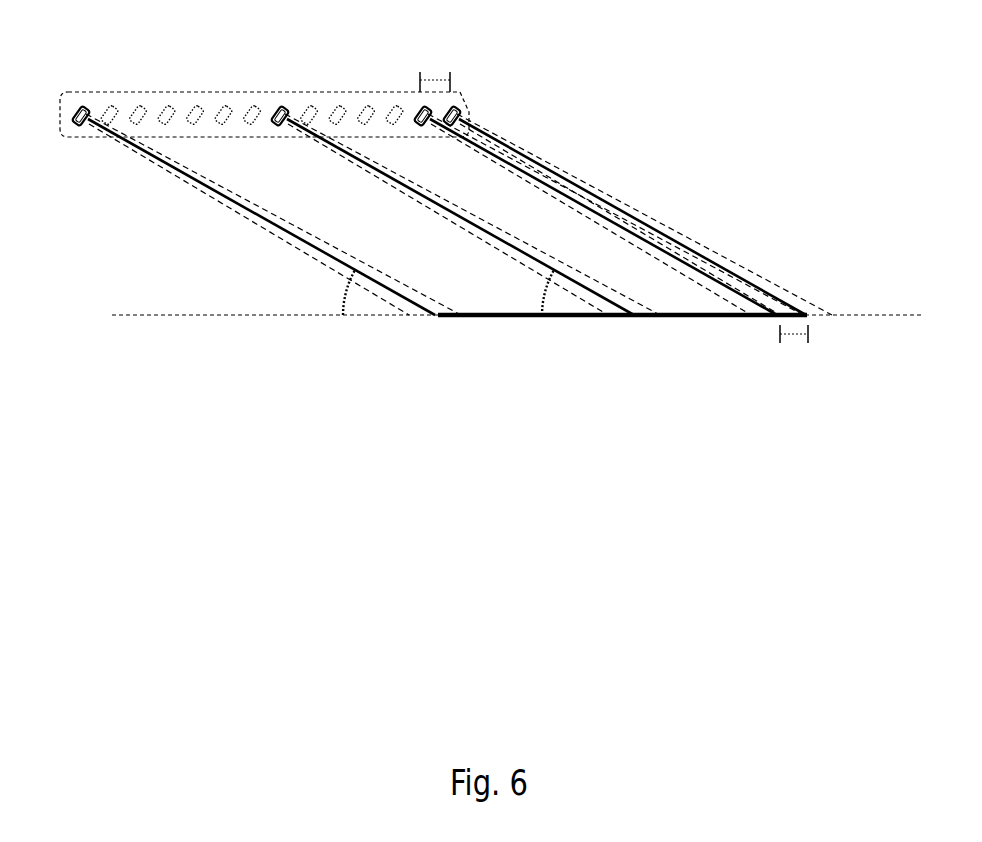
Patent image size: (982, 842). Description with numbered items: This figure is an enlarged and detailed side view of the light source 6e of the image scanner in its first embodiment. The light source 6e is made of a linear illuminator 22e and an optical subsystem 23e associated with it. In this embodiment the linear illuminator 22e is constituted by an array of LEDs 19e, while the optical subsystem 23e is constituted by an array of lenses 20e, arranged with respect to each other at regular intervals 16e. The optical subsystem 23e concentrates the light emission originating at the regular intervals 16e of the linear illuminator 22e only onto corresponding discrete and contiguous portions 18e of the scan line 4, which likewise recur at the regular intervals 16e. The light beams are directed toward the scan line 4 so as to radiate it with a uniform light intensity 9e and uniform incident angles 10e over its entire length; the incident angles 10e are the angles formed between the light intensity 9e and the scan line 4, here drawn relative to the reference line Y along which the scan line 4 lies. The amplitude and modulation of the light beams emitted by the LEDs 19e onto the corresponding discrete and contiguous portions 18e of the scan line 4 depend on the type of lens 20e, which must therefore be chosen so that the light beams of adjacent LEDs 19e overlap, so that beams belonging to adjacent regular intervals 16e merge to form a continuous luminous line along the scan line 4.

The scan line 4 is at (503, 318).
The light source 6e is at (251, 93).
The light intensity 9e is at (392, 178).
The incident angles 10e is at (540, 290).
The regular intervals 16e is at (432, 73).
The discrete and contiguous portion 18e is at (661, 318).
The LEDs 19e is at (100, 124).
The lenses 20e is at (106, 122).
The linear illuminator 22e is at (156, 100).
The optical subsystem 23e is at (176, 130).
The reference plane Y is at (148, 316).